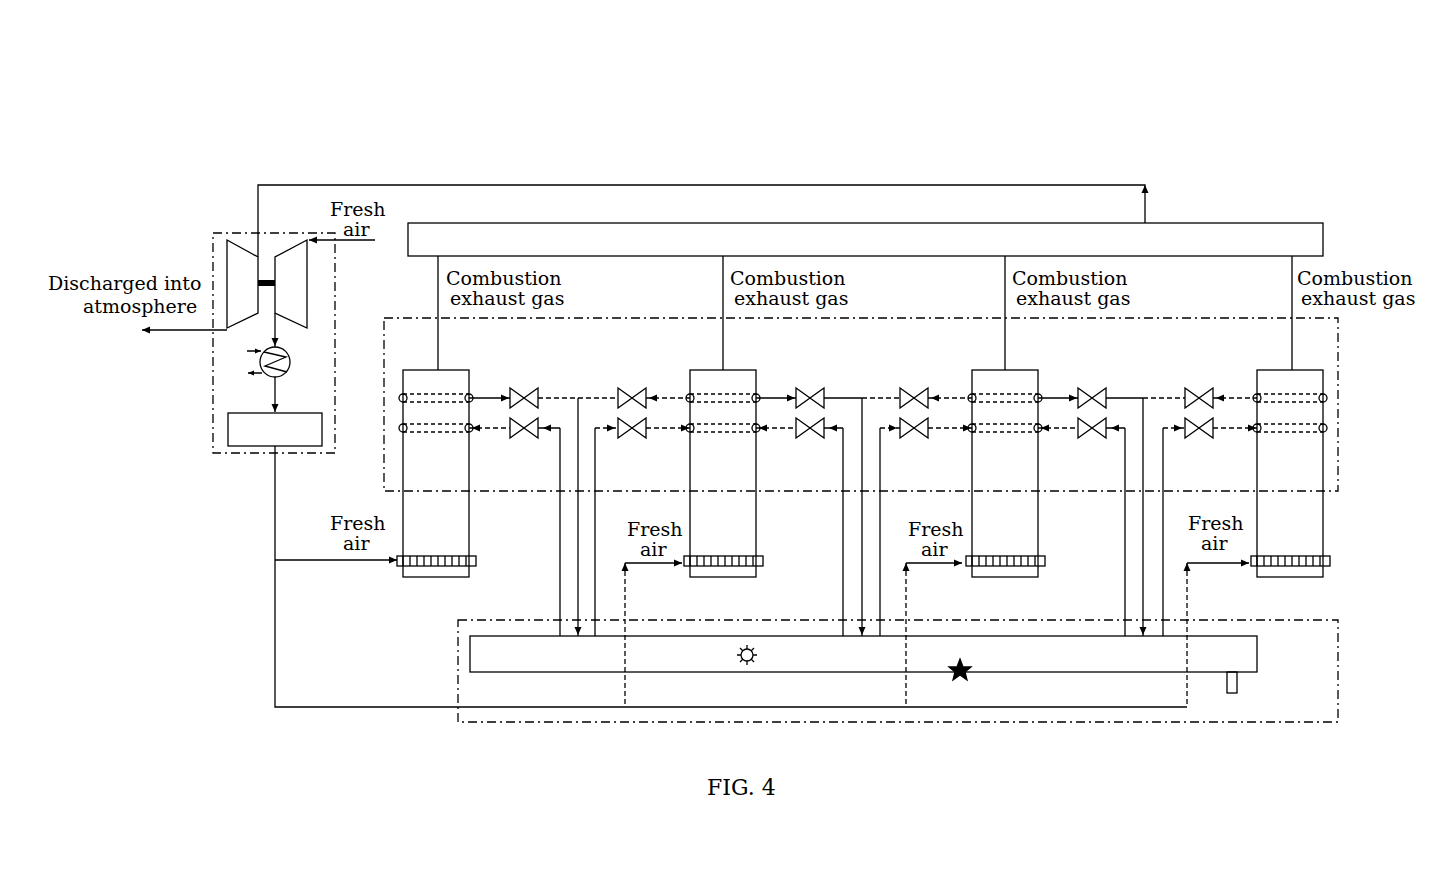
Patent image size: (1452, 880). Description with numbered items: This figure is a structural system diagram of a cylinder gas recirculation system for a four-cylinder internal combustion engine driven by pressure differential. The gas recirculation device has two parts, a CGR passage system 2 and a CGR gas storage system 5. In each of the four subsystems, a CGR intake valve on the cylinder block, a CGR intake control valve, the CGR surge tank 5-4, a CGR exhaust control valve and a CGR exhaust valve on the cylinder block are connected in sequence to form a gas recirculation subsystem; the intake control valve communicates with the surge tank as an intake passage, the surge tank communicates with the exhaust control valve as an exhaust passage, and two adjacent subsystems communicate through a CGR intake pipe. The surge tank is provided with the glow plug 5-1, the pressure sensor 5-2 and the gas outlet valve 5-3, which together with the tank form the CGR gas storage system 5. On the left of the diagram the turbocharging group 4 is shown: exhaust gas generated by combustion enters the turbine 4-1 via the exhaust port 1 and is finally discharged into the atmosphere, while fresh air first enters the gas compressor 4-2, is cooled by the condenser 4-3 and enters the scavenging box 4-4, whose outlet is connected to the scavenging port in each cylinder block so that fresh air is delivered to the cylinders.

The exhaust port 1 is at (865, 296).
The CGR passage system 2 is at (1338, 407).
The turbine and compressor unit 4 is at (258, 343).
The turbine 4-1 is at (229, 338).
The gas compressor 4-2 is at (350, 357).
The condenser 4-3 is at (335, 395).
The scavenging box 4-4 is at (275, 429).
The CGR gas storage system 5 is at (1338, 670).
The glow plug 5-1 is at (754, 661).
The pressure sensor 5-2 is at (965, 677).
The gas outlet valve 5-3 is at (1240, 675).
The CGR surge tank 5-4 is at (1258, 643).